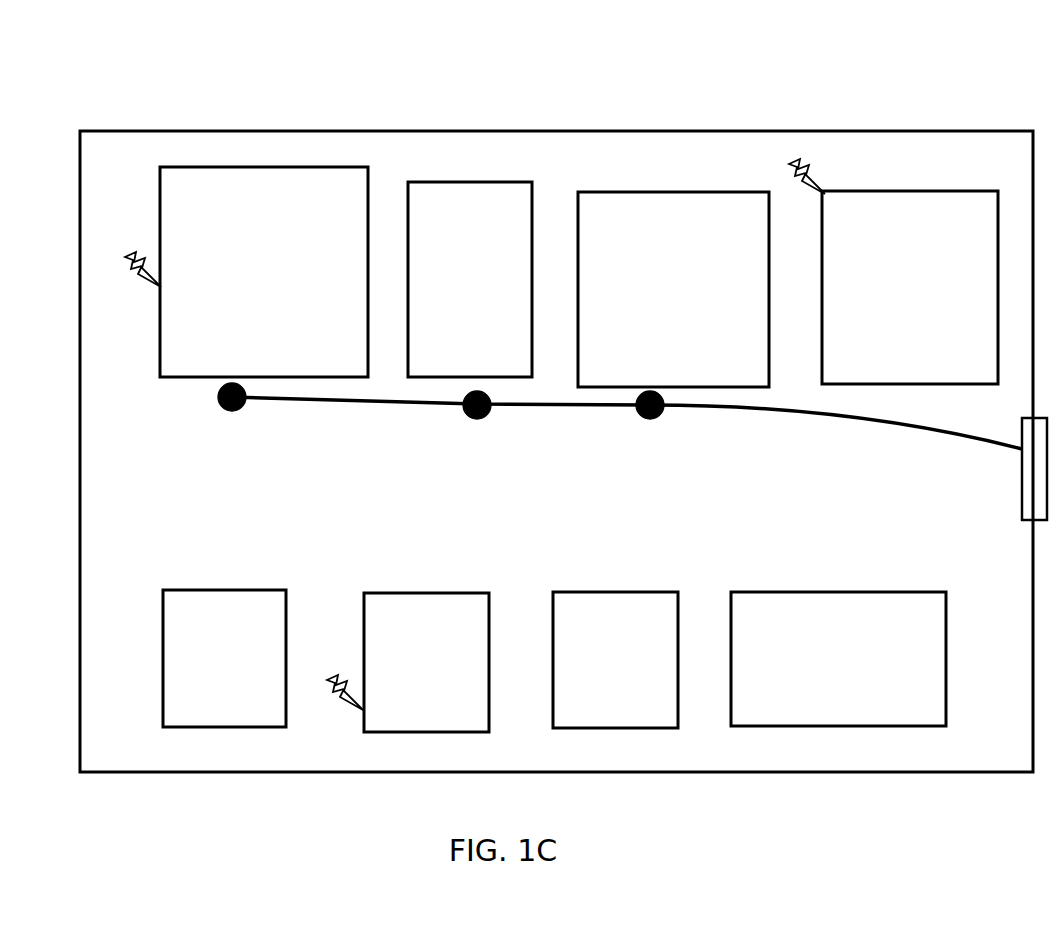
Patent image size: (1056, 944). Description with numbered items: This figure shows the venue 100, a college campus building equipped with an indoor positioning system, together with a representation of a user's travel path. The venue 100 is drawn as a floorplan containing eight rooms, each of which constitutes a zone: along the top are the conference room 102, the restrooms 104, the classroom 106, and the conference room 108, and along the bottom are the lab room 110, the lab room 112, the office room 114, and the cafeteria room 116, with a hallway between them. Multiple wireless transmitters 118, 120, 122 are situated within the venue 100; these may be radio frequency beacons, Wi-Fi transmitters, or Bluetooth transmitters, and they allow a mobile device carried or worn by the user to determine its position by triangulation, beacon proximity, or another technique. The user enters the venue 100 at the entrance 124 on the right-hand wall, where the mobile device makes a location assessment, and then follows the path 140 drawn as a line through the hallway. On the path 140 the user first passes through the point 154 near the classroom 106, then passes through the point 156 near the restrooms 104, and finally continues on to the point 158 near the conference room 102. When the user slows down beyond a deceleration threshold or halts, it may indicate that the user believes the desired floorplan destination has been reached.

The venue 100 is at (146, 92).
The conference room 102 is at (239, 332).
The restrooms 104 is at (455, 325).
The classroom 106 is at (657, 335).
The conference room 108 is at (890, 330).
The lab room 110 is at (208, 714).
The lab room 112 is at (411, 715).
The office room 114 is at (598, 713).
The cafeteria room 116 is at (808, 700).
The wireless transmitter 118 is at (148, 280).
The wireless transmitter 120 is at (785, 169).
The wireless transmitter 122 is at (339, 672).
The entrance 124 is at (1022, 487).
The path 140 is at (840, 415).
The point 154 is at (650, 420).
The point 156 is at (477, 420).
The point 158 is at (232, 412).